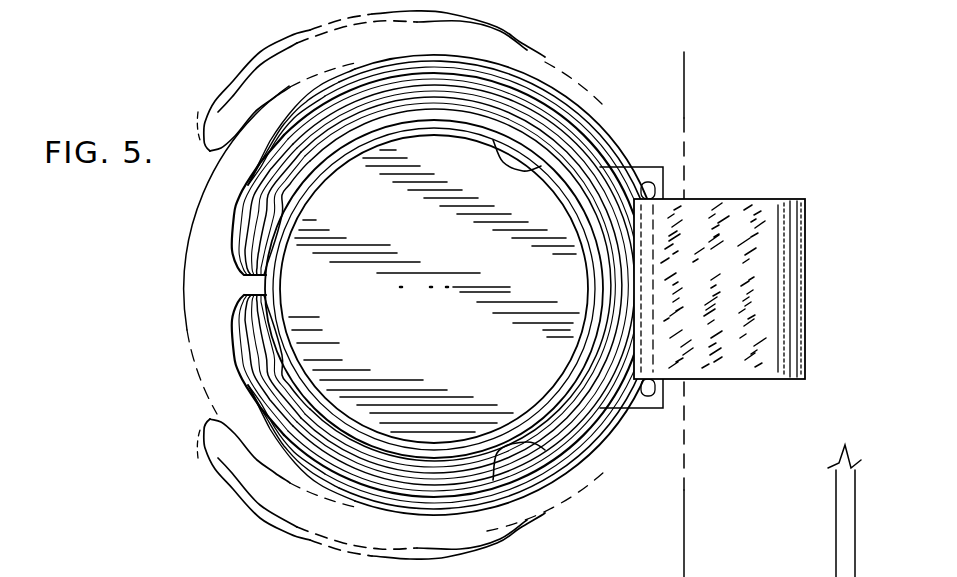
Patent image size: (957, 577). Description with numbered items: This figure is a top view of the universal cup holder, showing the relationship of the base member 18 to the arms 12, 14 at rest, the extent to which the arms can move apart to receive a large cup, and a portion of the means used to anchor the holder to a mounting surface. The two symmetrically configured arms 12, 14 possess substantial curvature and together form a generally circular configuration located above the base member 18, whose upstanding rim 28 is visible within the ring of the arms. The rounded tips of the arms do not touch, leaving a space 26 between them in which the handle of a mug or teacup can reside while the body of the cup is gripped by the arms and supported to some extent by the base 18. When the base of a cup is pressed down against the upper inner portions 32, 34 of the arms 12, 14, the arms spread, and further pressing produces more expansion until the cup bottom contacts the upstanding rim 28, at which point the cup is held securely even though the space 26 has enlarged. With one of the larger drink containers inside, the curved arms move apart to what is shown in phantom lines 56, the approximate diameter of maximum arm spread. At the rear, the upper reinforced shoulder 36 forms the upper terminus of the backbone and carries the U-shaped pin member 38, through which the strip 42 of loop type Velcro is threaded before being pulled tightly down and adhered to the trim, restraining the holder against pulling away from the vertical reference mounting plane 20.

The arm 12 is at (210, 95).
The arm 14 is at (250, 403).
The base member 18 is at (428, 341).
The vertical reference mounting plane 20 is at (685, 516).
The space 26 is at (247, 287).
The upstanding rim 28 is at (527, 170).
The upper inner portion 32 is at (495, 100).
The upper inner portion 34 is at (545, 450).
The upper reinforced shoulder 36 is at (623, 178).
The U-shaped pin member 38 is at (665, 190).
The strip of loop type Velcro 42 is at (730, 225).
The phantom lines 56 is at (185, 350).